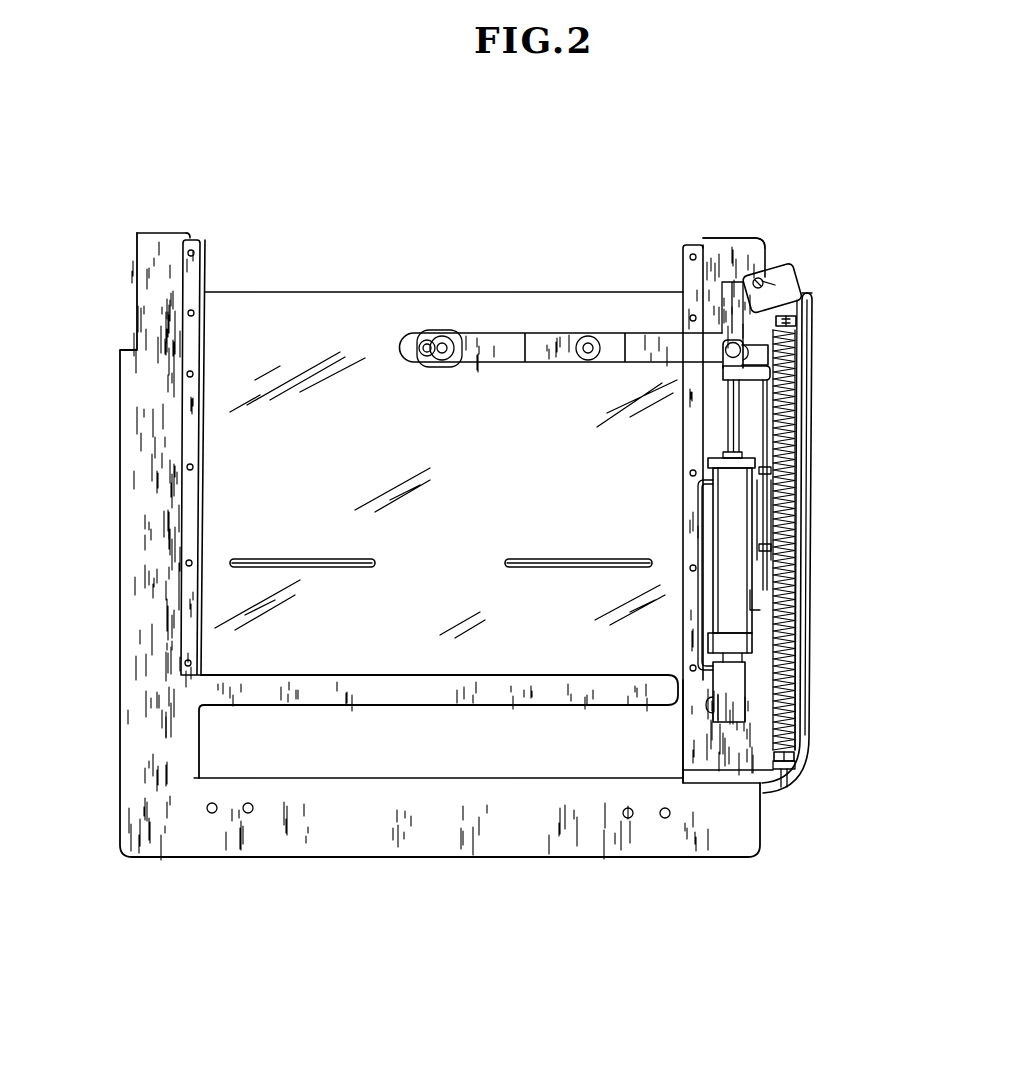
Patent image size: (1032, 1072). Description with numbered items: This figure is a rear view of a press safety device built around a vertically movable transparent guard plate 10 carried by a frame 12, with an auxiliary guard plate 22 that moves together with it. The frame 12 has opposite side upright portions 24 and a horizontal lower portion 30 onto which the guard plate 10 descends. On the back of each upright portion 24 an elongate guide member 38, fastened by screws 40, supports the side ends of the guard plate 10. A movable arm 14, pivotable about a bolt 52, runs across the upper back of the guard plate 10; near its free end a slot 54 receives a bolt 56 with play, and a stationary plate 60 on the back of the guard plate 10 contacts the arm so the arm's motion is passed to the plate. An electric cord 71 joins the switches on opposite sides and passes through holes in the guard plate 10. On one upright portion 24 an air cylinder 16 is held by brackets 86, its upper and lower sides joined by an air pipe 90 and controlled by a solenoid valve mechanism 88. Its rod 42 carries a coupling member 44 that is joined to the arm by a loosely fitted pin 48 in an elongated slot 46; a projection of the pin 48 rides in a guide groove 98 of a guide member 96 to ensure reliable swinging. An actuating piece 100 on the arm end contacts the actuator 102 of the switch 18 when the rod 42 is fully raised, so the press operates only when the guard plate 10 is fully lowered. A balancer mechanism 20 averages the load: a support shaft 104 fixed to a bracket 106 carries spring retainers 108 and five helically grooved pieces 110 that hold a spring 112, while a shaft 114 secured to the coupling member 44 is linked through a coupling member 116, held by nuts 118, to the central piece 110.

The guard plate 10 is at (280, 318).
The frame 12 is at (705, 865).
The movable arm 14 is at (483, 333).
The air cylinder 16 is at (806, 720).
The switch 18 is at (808, 296).
The balancer mechanism 20 is at (806, 680).
The auxiliary guard plate 22 is at (345, 695).
The upright portion 24 is at (152, 557).
The horizontal lower portion 30 is at (458, 825).
The guide member 38 is at (190, 275).
The screw 40 is at (191, 313).
The rod 42 is at (730, 425).
The coupling member 44 is at (804, 450).
The elongated slot 46 is at (748, 380).
The pin 48 is at (752, 352).
The bolt 52 is at (586, 335).
The slot 54 is at (427, 338).
The bolt 56 is at (443, 338).
The stationary plate 60 is at (405, 337).
The electric cord 71 is at (330, 565).
The bracket 86 is at (843, 625).
The solenoid valve mechanism 88 is at (730, 702).
The air pipe 90 is at (712, 605).
The guide member 96 is at (718, 320).
The guide groove 98 is at (762, 283).
The actuating piece 100 is at (790, 385).
The actuator 102 is at (790, 260).
The support shaft 104 is at (790, 786).
The bracket 106 is at (775, 772).
The spring retainer 108 is at (793, 322).
The piece 110 is at (795, 430).
The spring 112 is at (768, 548).
The shaft 114 is at (768, 472).
The coupling member 116 is at (775, 560).
The nut 118 is at (760, 600).